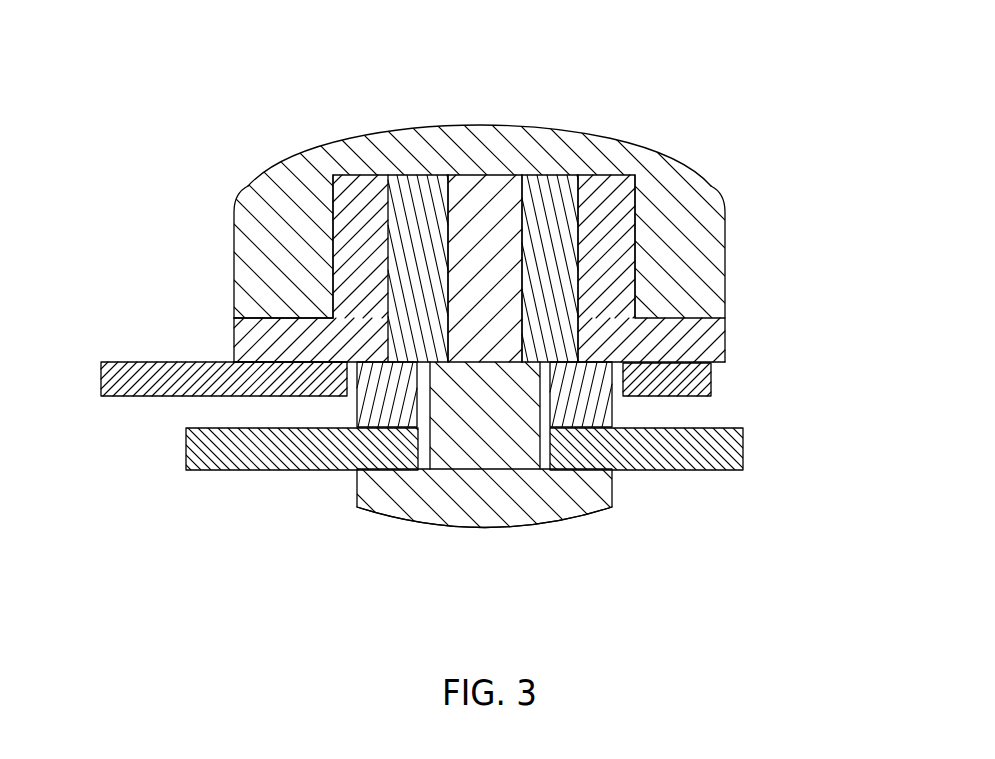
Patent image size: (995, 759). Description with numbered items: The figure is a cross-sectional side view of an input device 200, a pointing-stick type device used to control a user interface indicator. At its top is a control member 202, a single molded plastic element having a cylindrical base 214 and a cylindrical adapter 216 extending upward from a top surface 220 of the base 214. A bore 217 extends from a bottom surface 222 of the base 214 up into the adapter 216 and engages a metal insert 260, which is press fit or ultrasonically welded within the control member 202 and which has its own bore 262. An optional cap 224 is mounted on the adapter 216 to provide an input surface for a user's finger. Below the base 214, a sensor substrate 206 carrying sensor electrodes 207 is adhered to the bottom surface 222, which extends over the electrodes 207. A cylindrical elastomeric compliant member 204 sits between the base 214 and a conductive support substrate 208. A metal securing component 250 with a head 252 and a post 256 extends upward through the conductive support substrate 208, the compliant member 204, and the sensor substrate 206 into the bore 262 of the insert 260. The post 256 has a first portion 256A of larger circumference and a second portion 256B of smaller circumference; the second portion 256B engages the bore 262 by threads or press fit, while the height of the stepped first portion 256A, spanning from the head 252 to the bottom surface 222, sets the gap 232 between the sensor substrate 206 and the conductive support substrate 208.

The input device 200 is at (133, 130).
The control member 202 is at (635, 198).
The compliant member 204 is at (592, 422).
The sensor substrate 206 is at (240, 362).
The sensor electrodes 207 is at (694, 388).
The conductive support substrate 208 is at (743, 455).
The base 214 is at (725, 332).
The adapter 216 is at (333, 242).
The bore 217 is at (580, 256).
The top surface 220 is at (283, 317).
The bottom surface 222 is at (258, 352).
The cap 224 is at (352, 136).
The gap 232 is at (665, 407).
The securing component 250 is at (533, 497).
The head 252 is at (450, 528).
The post 256 is at (462, 446).
The first portion 256A is at (523, 358).
The second portion 256B is at (490, 187).
The insert 260 is at (549, 198).
The bore 262 is at (411, 190).